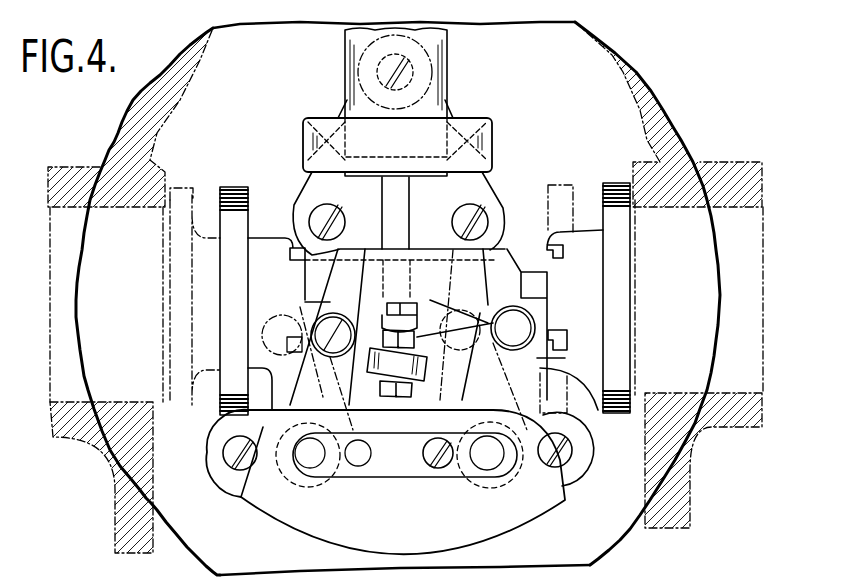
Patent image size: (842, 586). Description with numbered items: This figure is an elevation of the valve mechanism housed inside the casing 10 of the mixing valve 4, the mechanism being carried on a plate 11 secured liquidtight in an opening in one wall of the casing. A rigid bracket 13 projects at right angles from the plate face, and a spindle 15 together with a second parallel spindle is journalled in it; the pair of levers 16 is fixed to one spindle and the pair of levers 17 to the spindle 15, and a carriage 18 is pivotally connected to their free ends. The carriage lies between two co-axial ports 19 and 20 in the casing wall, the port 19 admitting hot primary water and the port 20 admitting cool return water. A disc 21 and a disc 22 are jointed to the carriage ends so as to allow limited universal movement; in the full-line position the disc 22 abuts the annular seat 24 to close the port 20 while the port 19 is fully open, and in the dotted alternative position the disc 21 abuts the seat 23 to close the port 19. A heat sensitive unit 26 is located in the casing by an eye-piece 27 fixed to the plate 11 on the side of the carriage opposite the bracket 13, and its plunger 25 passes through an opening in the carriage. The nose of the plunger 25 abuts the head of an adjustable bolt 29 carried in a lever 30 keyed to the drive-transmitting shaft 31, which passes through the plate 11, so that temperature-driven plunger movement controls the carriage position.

The valve 4 is at (510, 462).
The casing 10 is at (707, 157).
The plate 11 is at (577, 45).
The rigid bracket 13 is at (490, 522).
The spindle 15 is at (348, 463).
The pair of levers 16 is at (562, 423).
The pair of levers 17 is at (352, 392).
The carriage 18 is at (500, 257).
The port 19 is at (110, 301).
The port 20 is at (699, 297).
The disc 21 is at (221, 187).
The disc 22 is at (613, 183).
The annular seat 23 is at (160, 232).
The annular seat 24 is at (635, 227).
The plunger 25 is at (413, 199).
The heat sensitive unit 26 is at (430, 75).
The eye-piece 27 is at (468, 142).
The bolt 29 is at (386, 305).
The lever 30 is at (428, 392).
The drive-transmitting shaft 31 is at (545, 372).